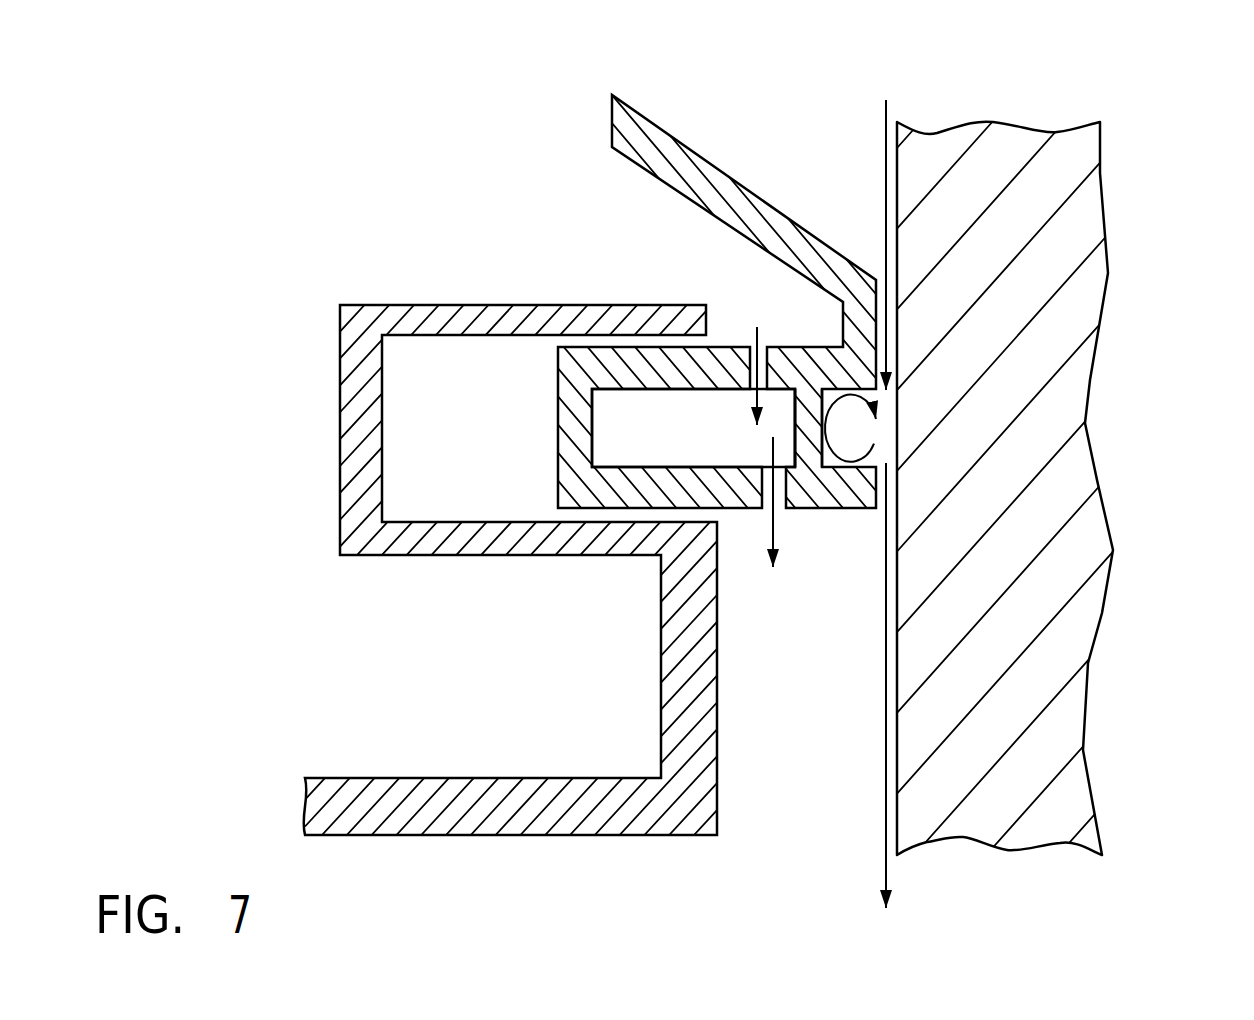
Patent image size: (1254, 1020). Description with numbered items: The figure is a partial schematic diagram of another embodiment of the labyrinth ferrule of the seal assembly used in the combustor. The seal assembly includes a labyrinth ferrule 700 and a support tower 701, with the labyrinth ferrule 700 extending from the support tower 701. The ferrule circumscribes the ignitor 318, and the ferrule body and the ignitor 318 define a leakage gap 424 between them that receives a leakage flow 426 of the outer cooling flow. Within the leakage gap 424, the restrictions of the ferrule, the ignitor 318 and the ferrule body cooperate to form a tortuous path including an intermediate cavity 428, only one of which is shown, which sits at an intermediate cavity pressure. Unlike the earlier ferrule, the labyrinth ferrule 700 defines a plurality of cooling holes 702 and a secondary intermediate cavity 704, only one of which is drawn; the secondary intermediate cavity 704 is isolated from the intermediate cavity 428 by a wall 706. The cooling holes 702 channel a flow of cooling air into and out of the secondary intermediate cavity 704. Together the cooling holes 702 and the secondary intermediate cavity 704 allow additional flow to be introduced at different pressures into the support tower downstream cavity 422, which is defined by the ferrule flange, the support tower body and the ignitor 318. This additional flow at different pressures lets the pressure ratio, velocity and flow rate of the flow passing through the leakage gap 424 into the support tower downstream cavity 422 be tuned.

The labyrinth ferrule 700 is at (560, 97).
The support tower 701 is at (693, 625).
The cooling holes 702 is at (753, 333).
The secondary intermediate cavity 704 is at (622, 441).
The wall 706 is at (795, 408).
The ignitor 318 is at (1025, 145).
The leakage gap 424 is at (818, 163).
The leakage flow 426 is at (886, 792).
The intermediate cavity 428 is at (878, 433).
The support tower downstream cavity 422 is at (773, 716).